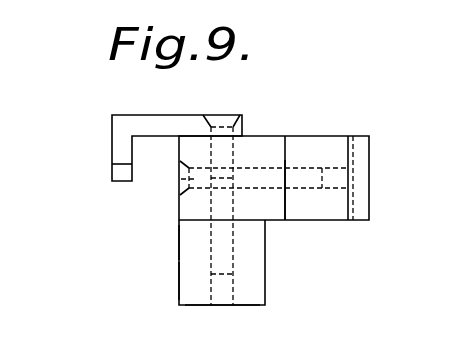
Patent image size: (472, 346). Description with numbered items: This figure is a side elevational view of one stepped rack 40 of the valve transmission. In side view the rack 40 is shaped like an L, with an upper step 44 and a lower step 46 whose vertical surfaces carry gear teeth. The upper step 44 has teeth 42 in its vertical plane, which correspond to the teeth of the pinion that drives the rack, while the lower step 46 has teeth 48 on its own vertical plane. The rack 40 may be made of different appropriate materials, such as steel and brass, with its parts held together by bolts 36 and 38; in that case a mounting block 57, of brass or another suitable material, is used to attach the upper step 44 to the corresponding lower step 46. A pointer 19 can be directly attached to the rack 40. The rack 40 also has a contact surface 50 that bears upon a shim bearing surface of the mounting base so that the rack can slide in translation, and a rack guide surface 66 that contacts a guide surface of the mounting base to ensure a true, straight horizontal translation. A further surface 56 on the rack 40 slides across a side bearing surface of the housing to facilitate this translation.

The pointer 19 is at (123, 123).
The mounting block 57 is at (193, 141).
The bolt 38 is at (242, 147).
The rack 40 is at (305, 148).
The teeth 42 is at (360, 171).
The upper step 44 is at (332, 225).
The rack guide surface 66 is at (293, 225).
The teeth 48 is at (255, 268).
The contact surface 50 is at (223, 307).
The lower step 46 is at (180, 275).
The surface 56 is at (180, 238).
The bolt 36 is at (180, 179).